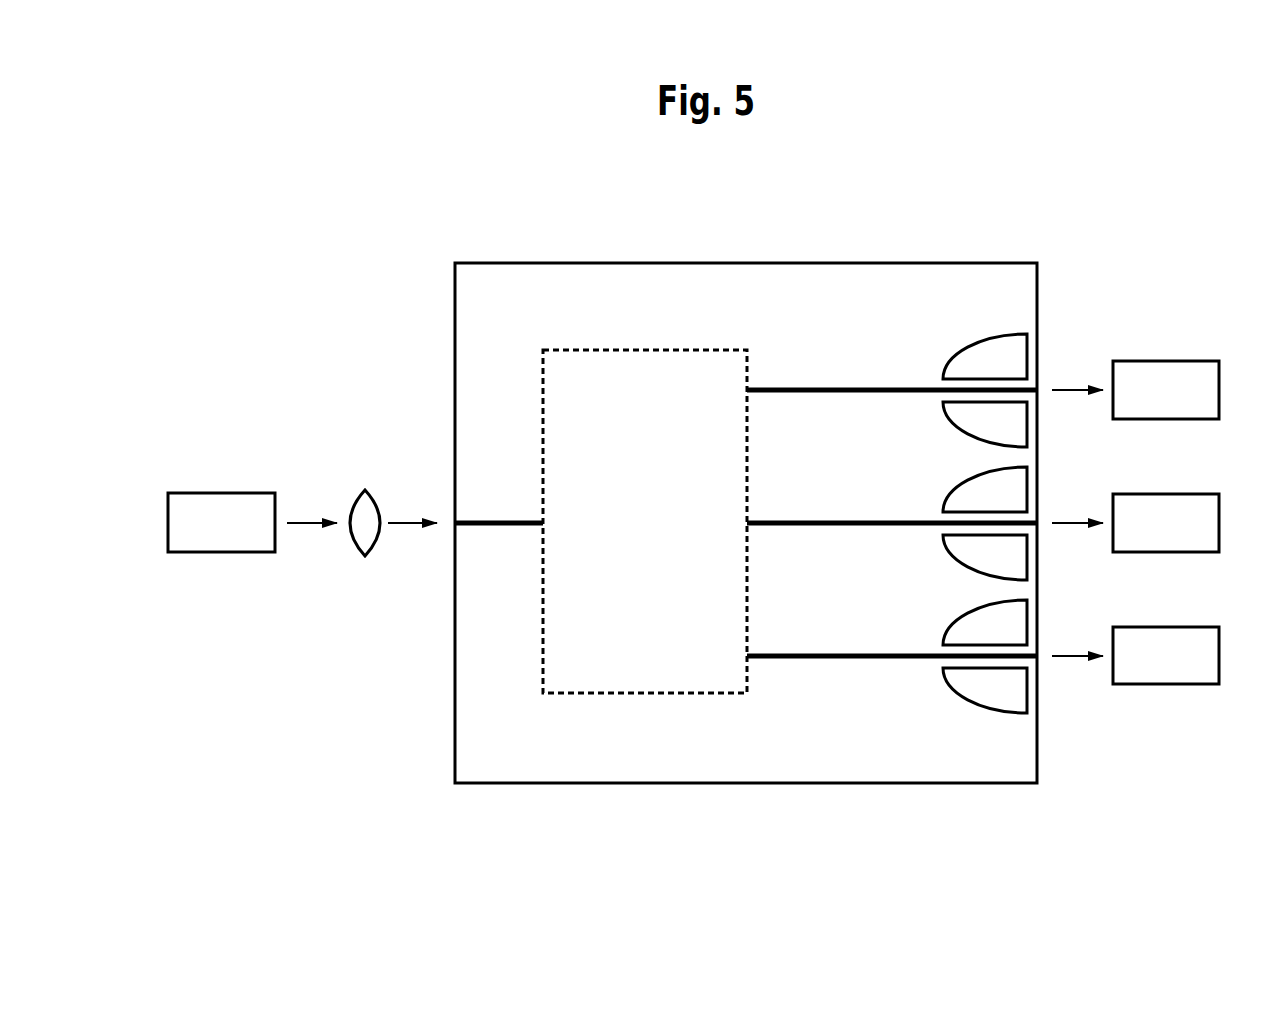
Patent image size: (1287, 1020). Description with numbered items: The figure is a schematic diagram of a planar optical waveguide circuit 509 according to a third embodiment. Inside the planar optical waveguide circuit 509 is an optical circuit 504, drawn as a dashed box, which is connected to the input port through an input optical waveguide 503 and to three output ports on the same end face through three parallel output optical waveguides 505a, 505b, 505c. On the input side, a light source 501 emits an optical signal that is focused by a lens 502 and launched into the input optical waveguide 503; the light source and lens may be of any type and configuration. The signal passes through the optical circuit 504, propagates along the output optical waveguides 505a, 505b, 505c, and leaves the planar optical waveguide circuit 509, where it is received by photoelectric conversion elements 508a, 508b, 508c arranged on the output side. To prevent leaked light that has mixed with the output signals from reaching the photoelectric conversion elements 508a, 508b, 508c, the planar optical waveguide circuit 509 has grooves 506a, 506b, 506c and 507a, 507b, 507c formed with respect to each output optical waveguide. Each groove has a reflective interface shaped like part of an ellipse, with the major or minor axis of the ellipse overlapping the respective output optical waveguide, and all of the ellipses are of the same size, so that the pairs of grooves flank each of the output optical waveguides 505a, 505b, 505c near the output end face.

The light source 501 is at (273, 493).
The lens 502 is at (373, 490).
The input optical waveguide 503 is at (492, 521).
The optical circuit 504 is at (728, 349).
The output optical waveguide 505a is at (780, 388).
The output optical waveguide 505b is at (780, 521).
The output optical waveguide 505c is at (780, 654).
The groove 506a is at (963, 342).
The groove 506b is at (963, 475).
The groove 506c is at (963, 606).
The groove 507a is at (962, 432).
The groove 507b is at (962, 565).
The groove 507c is at (962, 698).
The photoelectric conversion element 508a is at (1198, 361).
The photoelectric conversion element 508b is at (1198, 494).
The photoelectric conversion element 508c is at (1198, 627).
The planar optical waveguide circuit 509 is at (1010, 262).